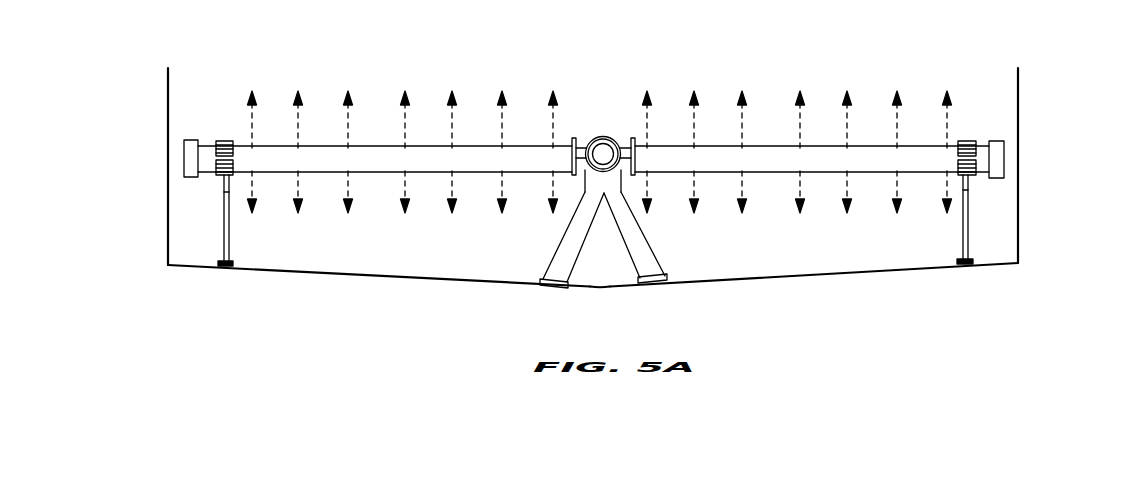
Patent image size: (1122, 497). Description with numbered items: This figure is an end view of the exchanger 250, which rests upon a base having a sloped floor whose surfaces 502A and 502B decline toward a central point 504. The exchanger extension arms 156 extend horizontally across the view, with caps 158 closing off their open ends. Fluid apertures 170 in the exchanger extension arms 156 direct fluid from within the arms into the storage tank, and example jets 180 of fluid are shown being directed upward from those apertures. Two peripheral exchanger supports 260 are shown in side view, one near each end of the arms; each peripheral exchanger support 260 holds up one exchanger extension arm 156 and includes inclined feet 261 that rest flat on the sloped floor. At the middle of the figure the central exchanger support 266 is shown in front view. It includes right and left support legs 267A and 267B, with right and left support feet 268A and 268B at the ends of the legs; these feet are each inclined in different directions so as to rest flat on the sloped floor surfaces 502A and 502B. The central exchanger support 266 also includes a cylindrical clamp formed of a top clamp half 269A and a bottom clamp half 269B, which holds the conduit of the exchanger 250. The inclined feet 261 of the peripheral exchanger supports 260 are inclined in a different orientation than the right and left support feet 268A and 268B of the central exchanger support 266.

The exchanger 250 is at (200, 54).
The exchanger extension arms 156 is at (495, 168).
The caps 158 is at (995, 141).
The fluid apertures 170 is at (290, 136).
The jets 180 is at (347, 128).
The peripheral exchanger supports 260 is at (233, 229).
The inclined feet 261 is at (232, 261).
The central exchanger support 266 is at (645, 219).
The right support leg 267A is at (643, 249).
The left support leg 267B is at (567, 249).
The right support foot 268A is at (664, 276).
The left support foot 268B is at (545, 278).
The top clamp half 269A is at (596, 166).
The bottom clamp half 269B is at (603, 136).
The sloped floor surface 502A is at (838, 277).
The sloped floor surface 502B is at (348, 274).
The central point 504 is at (606, 288).